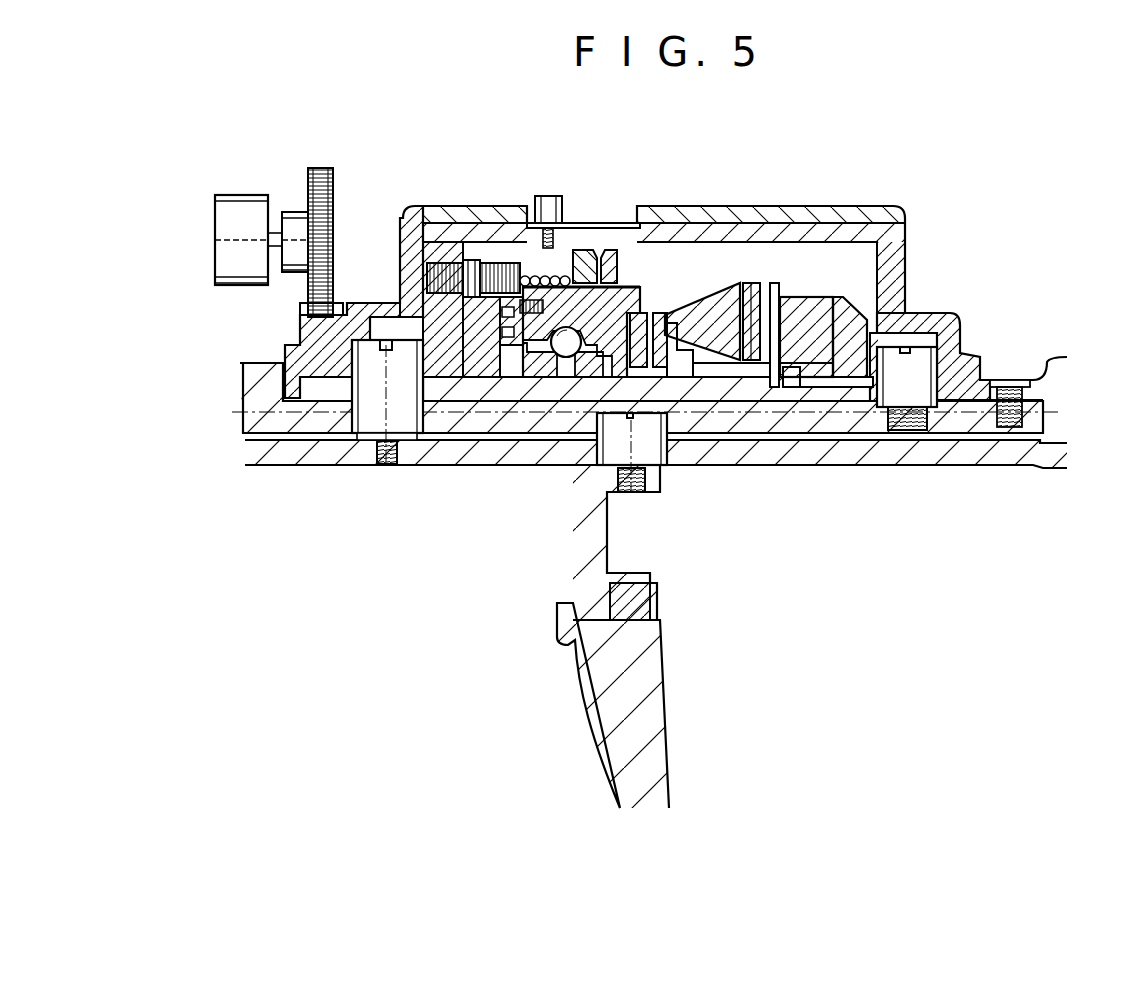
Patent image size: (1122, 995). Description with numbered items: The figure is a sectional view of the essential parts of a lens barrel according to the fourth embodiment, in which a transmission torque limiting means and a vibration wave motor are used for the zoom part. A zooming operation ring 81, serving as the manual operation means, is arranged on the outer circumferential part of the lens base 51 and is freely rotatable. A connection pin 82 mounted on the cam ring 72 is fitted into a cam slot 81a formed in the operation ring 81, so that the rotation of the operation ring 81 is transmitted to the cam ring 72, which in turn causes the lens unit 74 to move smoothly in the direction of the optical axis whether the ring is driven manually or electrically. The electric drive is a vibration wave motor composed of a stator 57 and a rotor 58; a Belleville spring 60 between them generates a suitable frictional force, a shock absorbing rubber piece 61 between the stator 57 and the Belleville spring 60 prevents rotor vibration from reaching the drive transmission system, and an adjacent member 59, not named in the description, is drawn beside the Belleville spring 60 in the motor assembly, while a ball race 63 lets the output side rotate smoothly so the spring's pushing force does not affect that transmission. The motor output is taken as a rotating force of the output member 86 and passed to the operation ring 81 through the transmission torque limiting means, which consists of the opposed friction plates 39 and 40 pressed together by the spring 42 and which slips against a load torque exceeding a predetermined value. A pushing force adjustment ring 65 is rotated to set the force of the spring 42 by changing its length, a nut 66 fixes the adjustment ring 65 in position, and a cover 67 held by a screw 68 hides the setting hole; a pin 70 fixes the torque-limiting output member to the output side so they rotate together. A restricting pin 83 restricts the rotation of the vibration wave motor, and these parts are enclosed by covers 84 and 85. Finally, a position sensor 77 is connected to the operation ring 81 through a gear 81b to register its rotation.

The friction plate 39 is at (447, 370).
The friction plate 40 is at (483, 365).
The spring 42 is at (527, 277).
The lens base 51 is at (268, 385).
The stator 57 is at (697, 305).
The rotor 58 is at (630, 372).
The wedge member 59 is at (843, 300).
The Belleville spring 60 is at (800, 315).
The shock absorbing rubber piece 61 is at (750, 315).
The ball race 63 is at (577, 380).
The pushing force adjustment ring 65 is at (594, 258).
The nut 66 is at (612, 262).
The cover 67 is at (574, 235).
The screw 68 is at (546, 205).
The pin 70 is at (540, 345).
The cam ring 72 is at (272, 455).
The lens unit 74 is at (645, 790).
The position sensor 77 is at (233, 215).
The zooming operation ring 81 is at (456, 238).
The cam slot 81a is at (367, 312).
The gear 81b is at (300, 310).
The connection pin 82 is at (367, 425).
The restricting pin 83 is at (952, 345).
The cover 84 is at (922, 367).
The cover 85 is at (417, 225).
The output member 86 is at (650, 450).